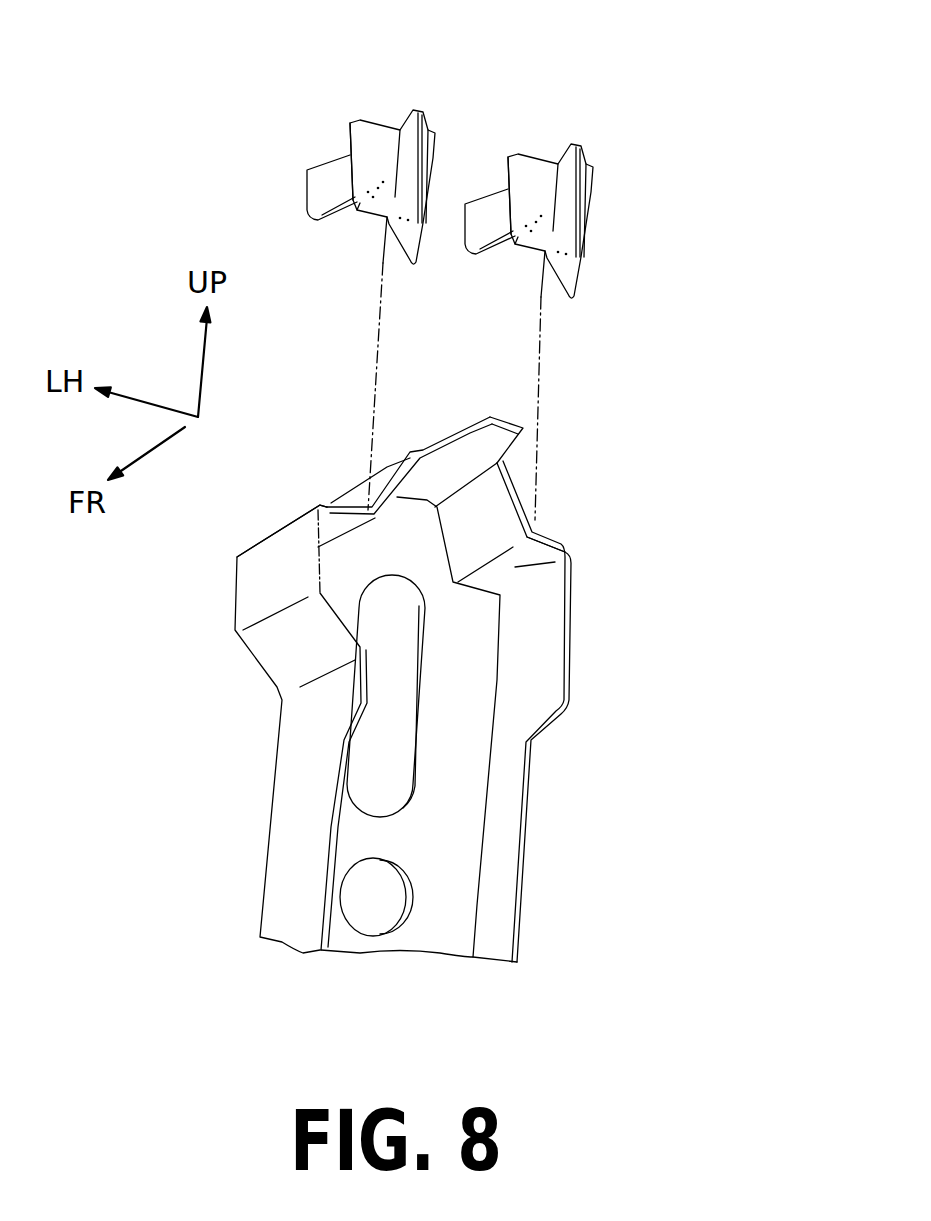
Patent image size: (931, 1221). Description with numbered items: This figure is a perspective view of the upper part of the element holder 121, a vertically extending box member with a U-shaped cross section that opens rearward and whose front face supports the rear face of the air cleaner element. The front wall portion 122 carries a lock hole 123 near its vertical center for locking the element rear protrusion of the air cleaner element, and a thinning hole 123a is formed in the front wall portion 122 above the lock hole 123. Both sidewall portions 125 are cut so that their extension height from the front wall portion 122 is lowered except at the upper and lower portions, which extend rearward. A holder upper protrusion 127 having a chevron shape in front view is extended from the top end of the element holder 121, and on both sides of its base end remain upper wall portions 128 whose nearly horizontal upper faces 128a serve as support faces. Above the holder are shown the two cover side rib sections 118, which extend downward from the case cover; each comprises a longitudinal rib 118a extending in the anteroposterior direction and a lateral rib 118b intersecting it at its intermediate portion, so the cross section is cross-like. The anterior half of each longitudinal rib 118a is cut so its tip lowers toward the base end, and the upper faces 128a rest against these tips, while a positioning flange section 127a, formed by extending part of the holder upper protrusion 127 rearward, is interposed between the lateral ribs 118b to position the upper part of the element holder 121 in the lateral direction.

The cover side rib section 118 is at (466, 260).
The longitudinal rib 118a is at (433, 158).
The lateral rib 118b is at (350, 136).
The element holder 121 is at (442, 642).
The front wall portion 122 is at (447, 832).
The lock hole 123 is at (395, 882).
The thinning hole 123a is at (385, 750).
The sidewall portion 125 is at (298, 787).
The holder upper protrusion 127 is at (383, 470).
The positioning flange section 127a is at (507, 410).
The upper wall portion 128 is at (515, 567).
The upper face 128a is at (327, 505).